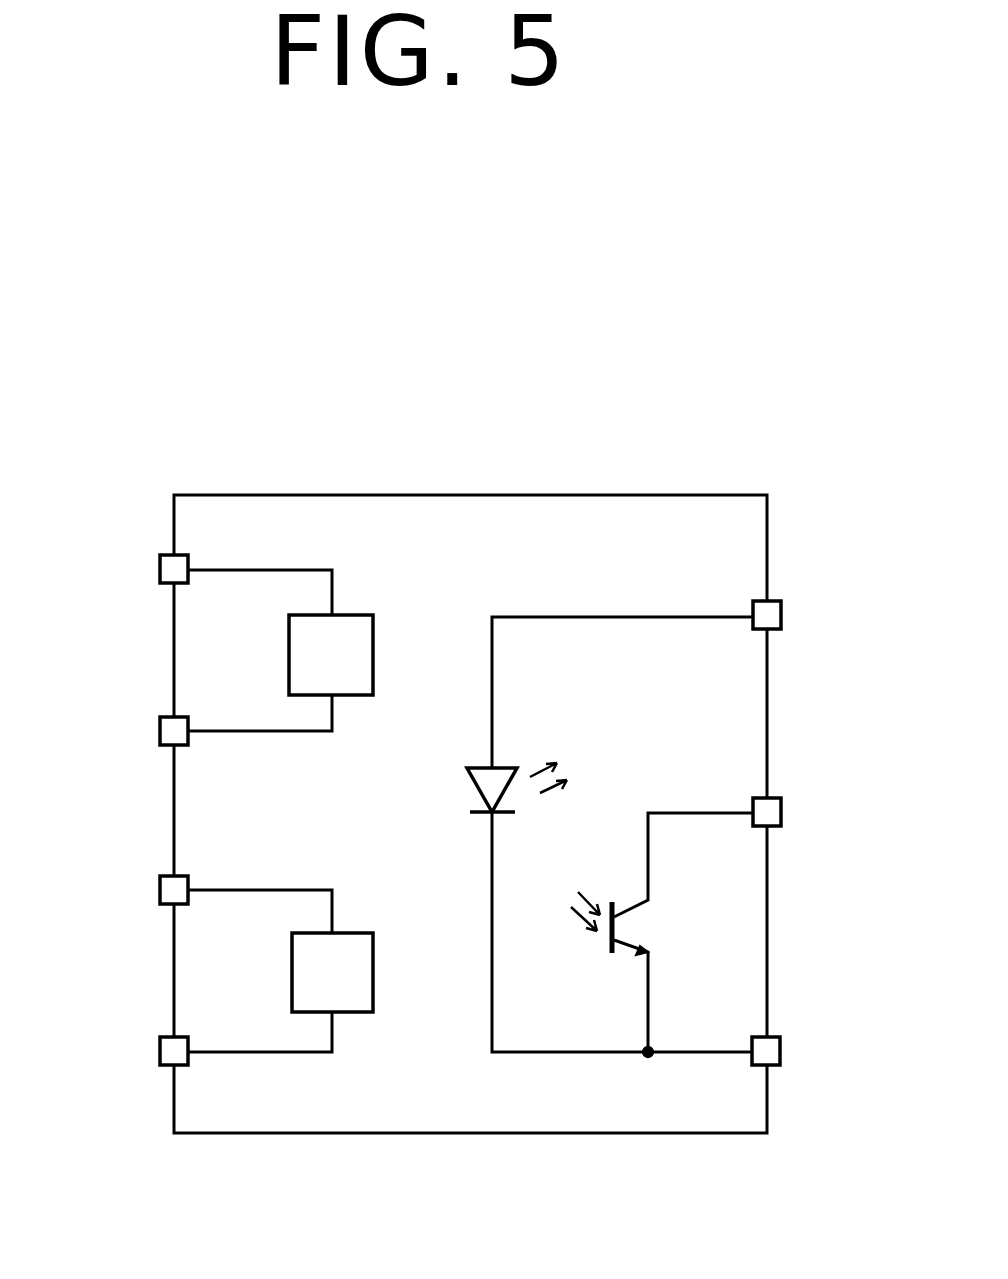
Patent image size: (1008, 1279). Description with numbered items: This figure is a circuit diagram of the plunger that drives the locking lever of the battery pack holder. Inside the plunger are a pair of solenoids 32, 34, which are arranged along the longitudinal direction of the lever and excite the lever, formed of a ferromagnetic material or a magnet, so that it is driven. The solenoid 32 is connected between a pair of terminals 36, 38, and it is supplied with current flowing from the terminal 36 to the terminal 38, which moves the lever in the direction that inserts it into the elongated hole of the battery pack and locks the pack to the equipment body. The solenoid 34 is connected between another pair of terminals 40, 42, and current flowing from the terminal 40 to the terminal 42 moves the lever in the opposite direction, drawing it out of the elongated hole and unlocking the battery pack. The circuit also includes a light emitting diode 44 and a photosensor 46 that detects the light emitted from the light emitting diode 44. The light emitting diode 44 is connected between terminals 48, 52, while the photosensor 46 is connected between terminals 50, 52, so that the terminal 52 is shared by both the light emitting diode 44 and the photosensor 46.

The solenoid 32 is at (372, 614).
The solenoid 34 is at (373, 933).
The terminal 36 is at (160, 570).
The terminal 38 is at (160, 732).
The terminal 40 is at (160, 890).
The terminal 42 is at (160, 1052).
The light emitting diode 44 is at (470, 792).
The photosensor 46 is at (600, 942).
The terminal 48 is at (782, 612).
The terminal 50 is at (782, 810).
The terminal 52 is at (782, 1055).